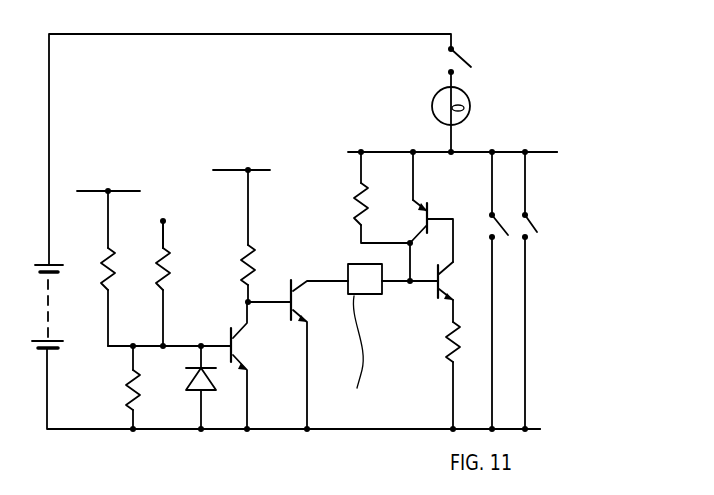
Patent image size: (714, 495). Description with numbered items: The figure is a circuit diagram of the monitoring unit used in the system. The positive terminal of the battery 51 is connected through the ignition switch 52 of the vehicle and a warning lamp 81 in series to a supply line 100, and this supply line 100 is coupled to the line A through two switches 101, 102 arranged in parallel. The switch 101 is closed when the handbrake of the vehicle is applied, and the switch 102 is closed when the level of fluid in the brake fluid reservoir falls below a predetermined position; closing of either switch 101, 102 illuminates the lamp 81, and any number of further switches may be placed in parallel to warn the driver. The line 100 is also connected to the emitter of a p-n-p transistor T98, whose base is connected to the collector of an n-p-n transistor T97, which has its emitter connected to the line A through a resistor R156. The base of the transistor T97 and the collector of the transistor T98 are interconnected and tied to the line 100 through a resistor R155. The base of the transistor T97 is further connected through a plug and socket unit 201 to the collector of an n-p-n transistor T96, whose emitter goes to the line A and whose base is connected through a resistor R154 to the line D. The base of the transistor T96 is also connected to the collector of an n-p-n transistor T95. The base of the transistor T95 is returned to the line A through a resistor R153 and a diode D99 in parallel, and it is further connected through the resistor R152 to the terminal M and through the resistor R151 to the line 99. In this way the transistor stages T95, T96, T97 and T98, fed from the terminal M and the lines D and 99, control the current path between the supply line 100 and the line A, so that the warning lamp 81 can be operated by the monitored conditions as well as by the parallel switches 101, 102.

The ignition switch 52 is at (470, 55).
The warning lamp 81 is at (470, 115).
The supply line 100 is at (502, 150).
The switch 101 is at (490, 222).
The switch 102 is at (531, 224).
The line 99 is at (92, 188).
The terminal M is at (165, 219).
The line D is at (262, 168).
The battery 51 is at (45, 300).
The resistor R151 is at (107, 259).
The resistor R152 is at (194, 253).
The resistor R153 is at (128, 380).
The resistor R154 is at (256, 263).
The resistor R155 is at (351, 207).
The resistor R156 is at (445, 345).
The n-p-n transistor T95 is at (245, 348).
The n-p-n transistor T96 is at (307, 312).
The n-p-n transistor T97 is at (450, 283).
The p-n-p transistor T98 is at (418, 212).
The diode D99 is at (192, 388).
The plug and socket unit 201 is at (359, 288).
The line A is at (410, 433).